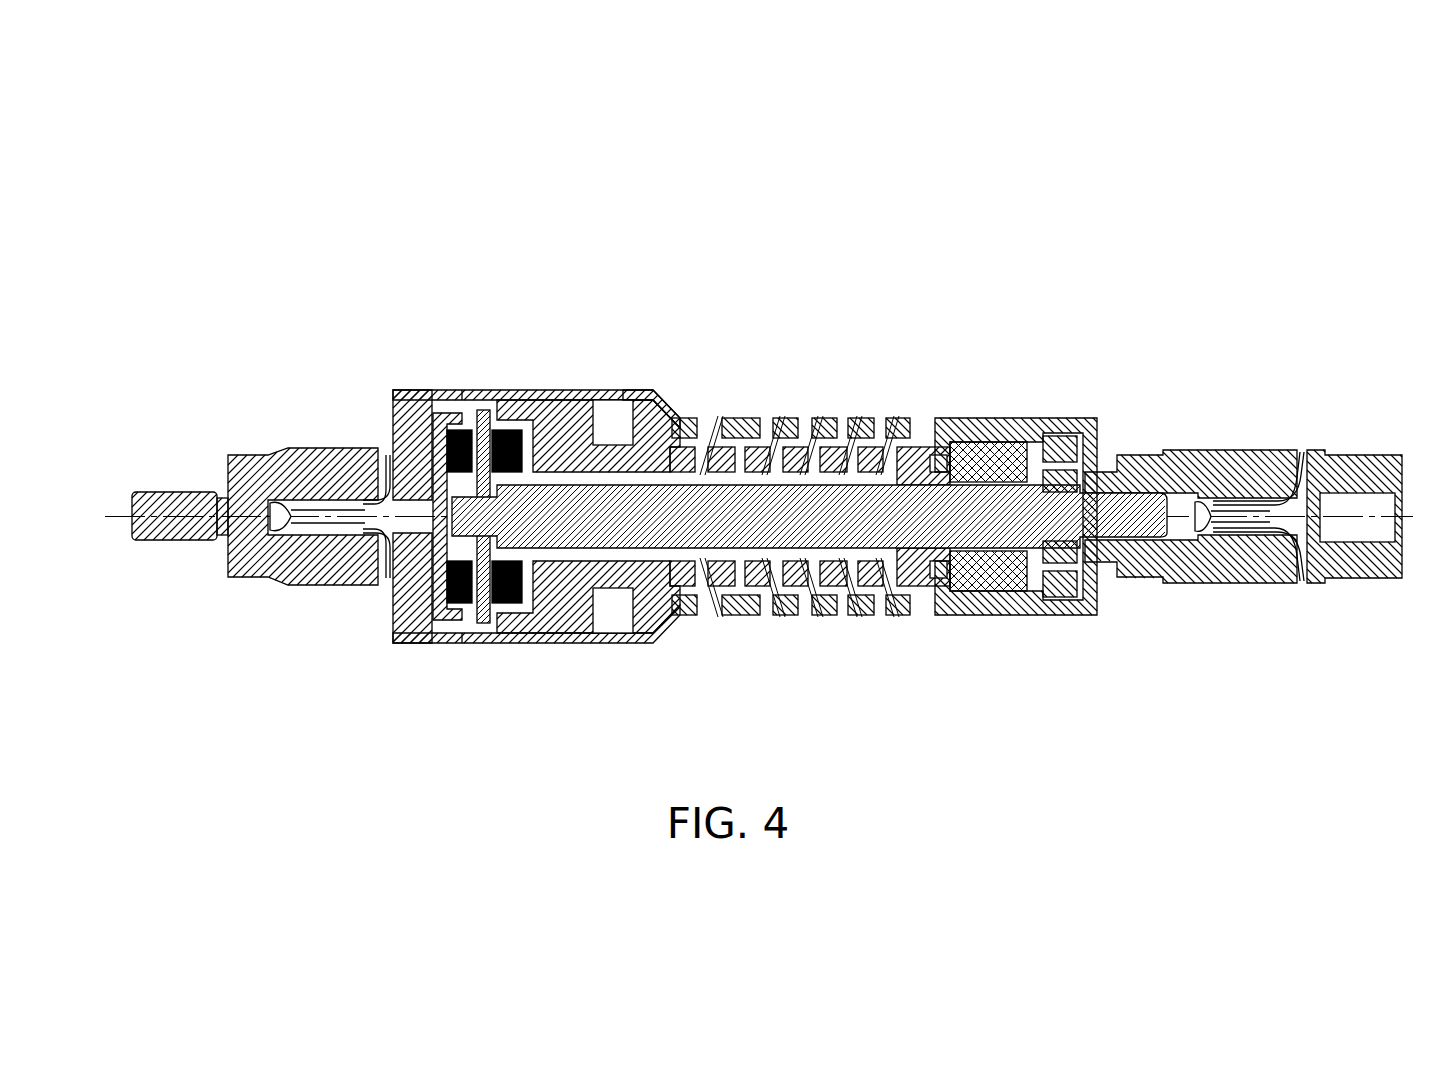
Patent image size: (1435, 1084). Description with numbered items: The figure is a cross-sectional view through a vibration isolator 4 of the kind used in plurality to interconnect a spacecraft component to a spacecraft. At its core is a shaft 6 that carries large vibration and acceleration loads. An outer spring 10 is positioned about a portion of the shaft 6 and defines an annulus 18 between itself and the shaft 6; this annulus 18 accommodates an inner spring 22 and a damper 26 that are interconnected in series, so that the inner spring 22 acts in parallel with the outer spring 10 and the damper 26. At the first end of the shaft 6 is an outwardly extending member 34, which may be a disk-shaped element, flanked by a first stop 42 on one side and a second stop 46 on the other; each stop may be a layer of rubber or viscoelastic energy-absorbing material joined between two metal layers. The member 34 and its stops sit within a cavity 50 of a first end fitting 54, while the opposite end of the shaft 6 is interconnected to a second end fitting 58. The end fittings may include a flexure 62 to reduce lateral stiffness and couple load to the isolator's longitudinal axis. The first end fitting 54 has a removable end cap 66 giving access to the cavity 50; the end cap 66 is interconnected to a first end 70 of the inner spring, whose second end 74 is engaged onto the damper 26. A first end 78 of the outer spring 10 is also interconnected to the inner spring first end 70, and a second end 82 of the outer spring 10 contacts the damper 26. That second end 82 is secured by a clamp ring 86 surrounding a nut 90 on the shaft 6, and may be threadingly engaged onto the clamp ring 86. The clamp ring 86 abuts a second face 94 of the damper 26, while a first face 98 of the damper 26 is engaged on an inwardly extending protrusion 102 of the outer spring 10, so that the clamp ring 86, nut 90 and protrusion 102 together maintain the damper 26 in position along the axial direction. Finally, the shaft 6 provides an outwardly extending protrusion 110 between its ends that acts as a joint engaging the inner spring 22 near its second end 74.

The vibration isolator 4 is at (1143, 282).
The shaft 6 is at (583, 487).
The outer spring 10 is at (788, 418).
The annulus 18 is at (620, 612).
The inner spring 22 is at (782, 615).
The damper 26 is at (1005, 595).
The outwardly extending member 34 is at (478, 617).
The first stop 42 is at (455, 430).
The second stop 46 is at (507, 427).
The cavity 50 is at (440, 595).
The first end fitting 54 is at (177, 488).
The second end fitting 58 is at (1357, 530).
The flexure 62 is at (275, 450).
The removable end cap 66 is at (412, 453).
The first end of the inner spring 70 is at (543, 390).
The second end of the inner spring 74 is at (940, 565).
The first end of the outer spring 78 is at (602, 392).
The second end of the outer spring 82 is at (1100, 427).
The clamp ring 86 is at (1060, 445).
The nut 90 is at (1023, 430).
The second face of the damper 94 is at (1050, 600).
The first face of the damper 98 is at (947, 436).
The inwardly extending protrusion 102 is at (935, 455).
The outwardly extending protrusion 110 is at (922, 560).